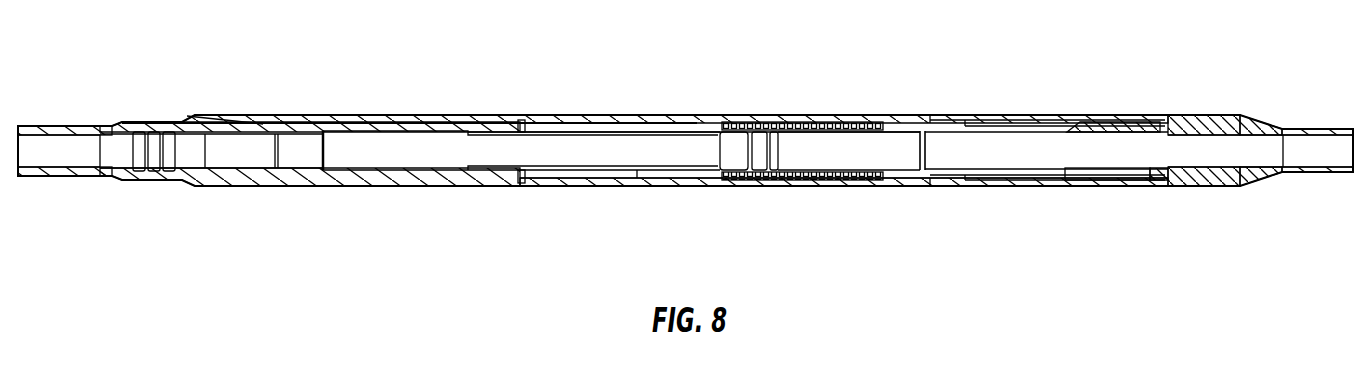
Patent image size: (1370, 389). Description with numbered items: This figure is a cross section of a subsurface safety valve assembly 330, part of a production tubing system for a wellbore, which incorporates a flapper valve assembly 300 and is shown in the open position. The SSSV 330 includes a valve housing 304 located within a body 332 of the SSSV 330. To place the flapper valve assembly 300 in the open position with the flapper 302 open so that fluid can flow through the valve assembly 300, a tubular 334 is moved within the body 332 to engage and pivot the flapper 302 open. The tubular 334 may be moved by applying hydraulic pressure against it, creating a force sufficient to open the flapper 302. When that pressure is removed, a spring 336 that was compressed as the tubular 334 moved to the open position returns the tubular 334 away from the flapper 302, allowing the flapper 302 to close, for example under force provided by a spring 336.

The flapper valve assembly 300 is at (1010, 196).
The flapper 302 is at (1108, 118).
The valve housing 304 is at (1038, 118).
The subsurface safety valve assembly 330 is at (608, 86).
The body 332 is at (975, 122).
The tubular 334 is at (890, 140).
The spring 336 is at (806, 177).